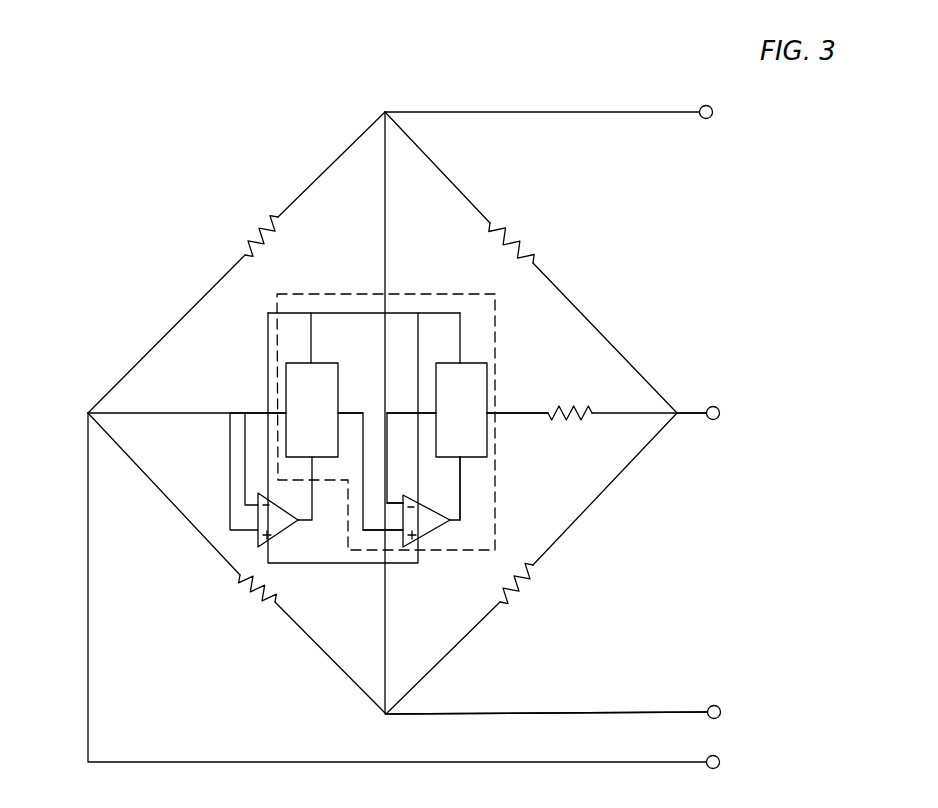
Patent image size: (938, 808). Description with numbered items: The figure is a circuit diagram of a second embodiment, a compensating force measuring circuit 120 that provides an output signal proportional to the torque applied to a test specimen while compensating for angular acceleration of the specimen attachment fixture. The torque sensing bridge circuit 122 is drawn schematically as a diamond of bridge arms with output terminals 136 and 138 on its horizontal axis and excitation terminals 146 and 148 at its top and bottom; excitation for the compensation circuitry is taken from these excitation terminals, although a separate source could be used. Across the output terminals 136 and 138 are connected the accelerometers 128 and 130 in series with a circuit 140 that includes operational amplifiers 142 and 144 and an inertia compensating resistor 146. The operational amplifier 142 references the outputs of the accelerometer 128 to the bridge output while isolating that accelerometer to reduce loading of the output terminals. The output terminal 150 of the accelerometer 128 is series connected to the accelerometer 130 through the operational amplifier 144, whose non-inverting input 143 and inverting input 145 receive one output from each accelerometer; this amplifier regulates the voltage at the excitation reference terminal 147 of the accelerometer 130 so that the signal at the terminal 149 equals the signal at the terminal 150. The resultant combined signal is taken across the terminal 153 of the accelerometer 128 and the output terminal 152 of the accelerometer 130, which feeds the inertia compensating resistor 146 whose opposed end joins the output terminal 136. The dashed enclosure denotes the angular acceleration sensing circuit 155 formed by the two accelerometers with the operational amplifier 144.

The compensating force measuring circuit 120 is at (258, 122).
The torque sensing bridge circuit 122 is at (588, 232).
The accelerometer 128 is at (311, 363).
The accelerometer 130 is at (495, 462).
The output terminal 136 is at (677, 413).
The output terminal 138 is at (88, 413).
The circuit 140 is at (494, 505).
The operational amplifier 142 is at (272, 537).
The non-inverting input 143 is at (402, 533).
The operational amplifier 144 is at (437, 537).
The inverting input 145 is at (404, 497).
The inertia compensating resistor 146 is at (385, 112).
The excitation reference terminal 147 is at (462, 468).
The excitation terminal 148 is at (386, 714).
The terminal 149 is at (436, 413).
The output terminal 150 is at (338, 413).
The output terminal 152 is at (490, 413).
The terminal 153 is at (286, 413).
The angular acceleration sensing circuit 155 is at (360, 232).